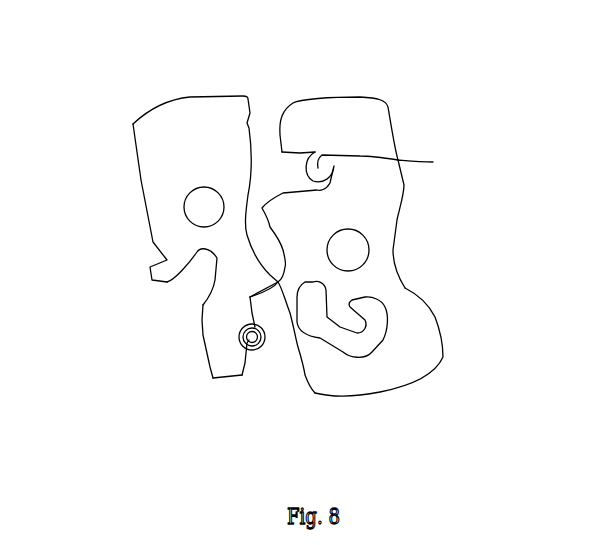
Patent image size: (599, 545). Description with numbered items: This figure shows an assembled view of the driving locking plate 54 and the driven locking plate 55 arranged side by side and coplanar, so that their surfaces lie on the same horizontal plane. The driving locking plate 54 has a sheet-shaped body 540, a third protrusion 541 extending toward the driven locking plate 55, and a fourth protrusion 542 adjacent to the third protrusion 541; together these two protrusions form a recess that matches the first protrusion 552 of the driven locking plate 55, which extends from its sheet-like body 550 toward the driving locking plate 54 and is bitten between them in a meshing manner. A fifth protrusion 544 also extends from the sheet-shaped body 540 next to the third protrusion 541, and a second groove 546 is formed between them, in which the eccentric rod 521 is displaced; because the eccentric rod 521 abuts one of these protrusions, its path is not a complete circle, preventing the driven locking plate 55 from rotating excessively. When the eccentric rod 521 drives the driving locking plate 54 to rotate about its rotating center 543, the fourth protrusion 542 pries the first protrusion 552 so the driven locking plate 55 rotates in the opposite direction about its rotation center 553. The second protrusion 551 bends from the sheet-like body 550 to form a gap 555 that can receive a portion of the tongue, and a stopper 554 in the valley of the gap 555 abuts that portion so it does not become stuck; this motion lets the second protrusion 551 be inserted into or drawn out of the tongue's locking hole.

The driving locking plate 54 is at (192, 93).
The sheet-shaped body 540 is at (145, 143).
The third protrusion 541 is at (240, 330).
The fourth protrusion 542 is at (267, 278).
The rotating center 543 is at (187, 215).
The fifth protrusion 544 is at (233, 360).
The second groove 546 is at (242, 376).
The eccentric rod 521 is at (255, 349).
The driven locking plate 55 is at (382, 97).
The sheet-like body 550 is at (405, 288).
The second protrusion 551 is at (298, 128).
The first protrusion 552 is at (262, 302).
The rotation center 553 is at (365, 248).
The stopper 554 is at (396, 163).
The gap 555 is at (295, 172).